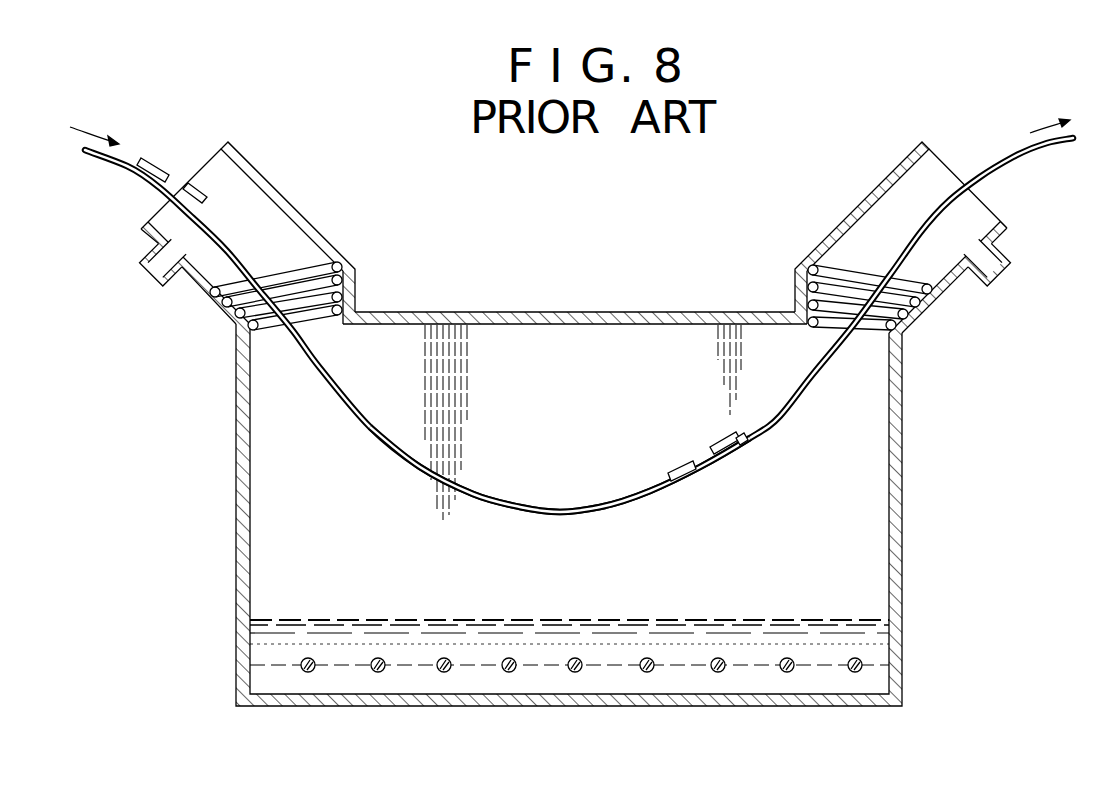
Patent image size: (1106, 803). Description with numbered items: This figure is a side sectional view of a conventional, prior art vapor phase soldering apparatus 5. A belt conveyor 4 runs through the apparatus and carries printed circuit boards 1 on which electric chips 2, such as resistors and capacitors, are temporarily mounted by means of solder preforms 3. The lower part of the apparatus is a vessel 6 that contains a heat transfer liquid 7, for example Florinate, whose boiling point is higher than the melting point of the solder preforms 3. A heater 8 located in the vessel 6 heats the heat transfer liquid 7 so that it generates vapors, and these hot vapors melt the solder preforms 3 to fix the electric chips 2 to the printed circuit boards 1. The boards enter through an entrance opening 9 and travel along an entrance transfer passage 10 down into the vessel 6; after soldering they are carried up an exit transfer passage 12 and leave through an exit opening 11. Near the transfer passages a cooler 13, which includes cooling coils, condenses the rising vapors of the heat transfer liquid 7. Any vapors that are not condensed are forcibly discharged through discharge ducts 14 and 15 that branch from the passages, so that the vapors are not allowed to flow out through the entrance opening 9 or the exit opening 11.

The printed circuit board 1 is at (140, 174).
The electric chip 2 is at (190, 184).
The solder preform 3 is at (204, 197).
The belt conveyor 4 is at (500, 497).
The vapor phase soldering apparatus 5 is at (489, 306).
The vessel 6 is at (902, 530).
The heat transfer liquid 7 is at (682, 622).
The heater 8 is at (380, 657).
The entrance opening 9 is at (160, 210).
The entrance transfer passage 10 is at (305, 218).
The exit opening 11 is at (990, 213).
The exit transfer passage 12 is at (846, 216).
The cooler 13 is at (343, 290).
The discharge duct 14 is at (162, 287).
The discharge duct 15 is at (987, 288).